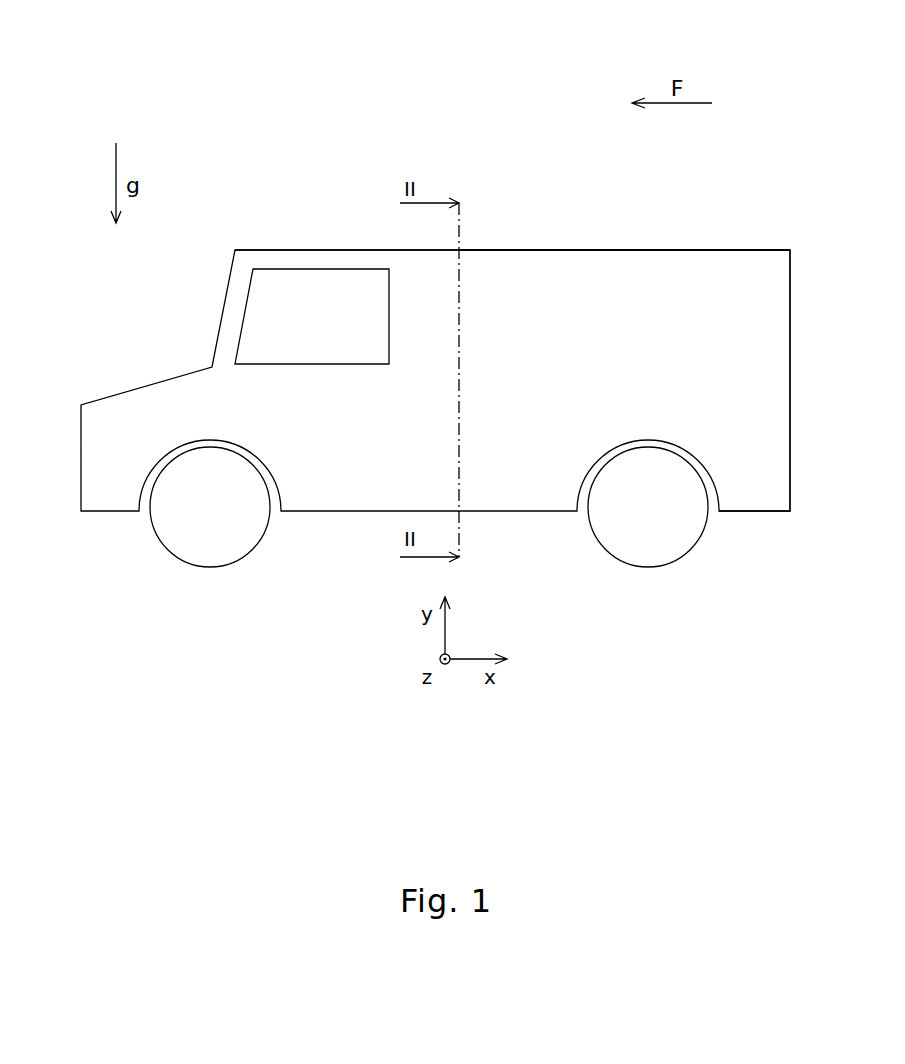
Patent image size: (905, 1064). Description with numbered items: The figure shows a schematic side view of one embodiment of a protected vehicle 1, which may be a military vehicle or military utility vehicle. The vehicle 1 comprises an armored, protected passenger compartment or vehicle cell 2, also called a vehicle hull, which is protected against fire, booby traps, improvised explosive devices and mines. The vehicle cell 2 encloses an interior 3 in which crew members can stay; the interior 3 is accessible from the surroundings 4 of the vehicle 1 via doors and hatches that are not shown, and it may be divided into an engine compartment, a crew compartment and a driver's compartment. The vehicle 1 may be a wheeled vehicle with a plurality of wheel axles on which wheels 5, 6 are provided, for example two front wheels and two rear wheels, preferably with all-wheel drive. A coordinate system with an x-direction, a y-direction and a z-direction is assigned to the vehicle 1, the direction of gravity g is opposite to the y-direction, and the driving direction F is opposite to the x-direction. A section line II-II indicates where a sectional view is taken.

The protected vehicle 1 is at (371, 95).
The vehicle cell 2 is at (695, 250).
The interior 3 is at (558, 387).
The surroundings 4 is at (558, 203).
The wheel 5 is at (207, 567).
The wheel 6 is at (647, 567).